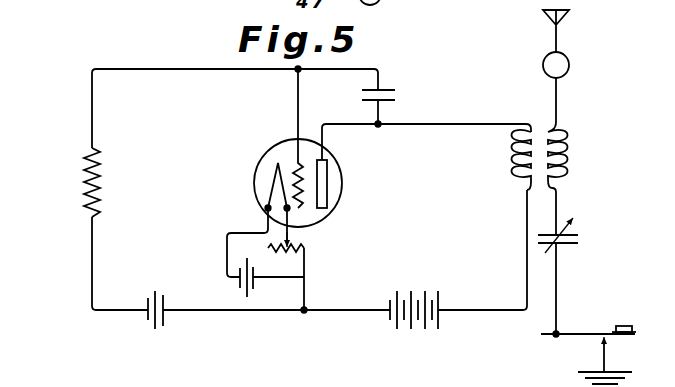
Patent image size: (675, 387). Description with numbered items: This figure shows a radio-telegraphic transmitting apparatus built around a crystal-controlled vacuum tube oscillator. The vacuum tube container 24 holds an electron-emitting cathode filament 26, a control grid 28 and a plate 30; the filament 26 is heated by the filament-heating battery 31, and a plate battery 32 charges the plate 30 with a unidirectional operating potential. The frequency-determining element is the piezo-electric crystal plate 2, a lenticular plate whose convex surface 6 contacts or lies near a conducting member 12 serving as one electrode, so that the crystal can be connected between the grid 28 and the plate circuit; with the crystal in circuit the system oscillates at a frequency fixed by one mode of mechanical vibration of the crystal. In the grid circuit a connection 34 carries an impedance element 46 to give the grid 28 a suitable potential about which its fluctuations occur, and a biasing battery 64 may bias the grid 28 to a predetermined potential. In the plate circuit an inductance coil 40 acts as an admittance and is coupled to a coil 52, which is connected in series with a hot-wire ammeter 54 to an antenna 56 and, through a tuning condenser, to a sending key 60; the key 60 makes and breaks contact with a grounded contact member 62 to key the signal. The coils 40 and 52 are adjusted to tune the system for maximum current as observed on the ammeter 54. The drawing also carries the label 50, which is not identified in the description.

The piezo-electric crystal plate 2 is at (396, 97).
The convex surface 6 is at (368, 104).
The conducting member 12 is at (385, 91).
The vacuum tube container 24 is at (271, 147).
The cathode filament 26 is at (265, 186).
The control grid 28 is at (303, 212).
The plate 30 is at (332, 183).
The filament-heating battery 31 is at (230, 283).
The plate battery 32 is at (438, 292).
The connection 34 is at (162, 72).
The inductance coil 40 is at (515, 141).
The impedance element 46 is at (82, 165).
The antenna 50 is at (571, 13).
The coil 52 is at (564, 176).
The hot-wire ammeter 54 is at (569, 57).
The antenna 56 is at (563, 245).
The sending key 60 is at (624, 327).
The grounded contact member 62 is at (609, 349).
The biasing battery 64 is at (157, 292).